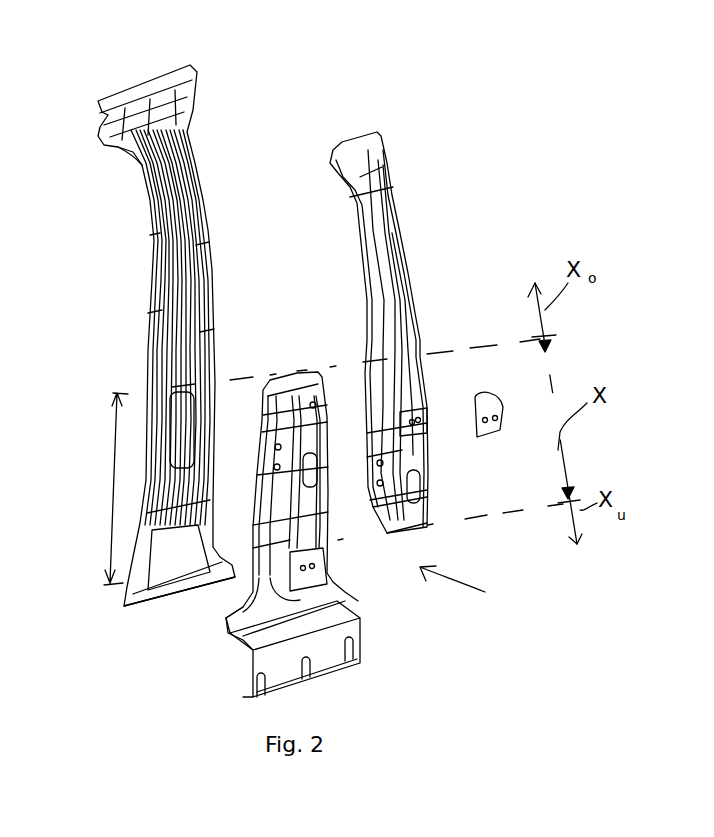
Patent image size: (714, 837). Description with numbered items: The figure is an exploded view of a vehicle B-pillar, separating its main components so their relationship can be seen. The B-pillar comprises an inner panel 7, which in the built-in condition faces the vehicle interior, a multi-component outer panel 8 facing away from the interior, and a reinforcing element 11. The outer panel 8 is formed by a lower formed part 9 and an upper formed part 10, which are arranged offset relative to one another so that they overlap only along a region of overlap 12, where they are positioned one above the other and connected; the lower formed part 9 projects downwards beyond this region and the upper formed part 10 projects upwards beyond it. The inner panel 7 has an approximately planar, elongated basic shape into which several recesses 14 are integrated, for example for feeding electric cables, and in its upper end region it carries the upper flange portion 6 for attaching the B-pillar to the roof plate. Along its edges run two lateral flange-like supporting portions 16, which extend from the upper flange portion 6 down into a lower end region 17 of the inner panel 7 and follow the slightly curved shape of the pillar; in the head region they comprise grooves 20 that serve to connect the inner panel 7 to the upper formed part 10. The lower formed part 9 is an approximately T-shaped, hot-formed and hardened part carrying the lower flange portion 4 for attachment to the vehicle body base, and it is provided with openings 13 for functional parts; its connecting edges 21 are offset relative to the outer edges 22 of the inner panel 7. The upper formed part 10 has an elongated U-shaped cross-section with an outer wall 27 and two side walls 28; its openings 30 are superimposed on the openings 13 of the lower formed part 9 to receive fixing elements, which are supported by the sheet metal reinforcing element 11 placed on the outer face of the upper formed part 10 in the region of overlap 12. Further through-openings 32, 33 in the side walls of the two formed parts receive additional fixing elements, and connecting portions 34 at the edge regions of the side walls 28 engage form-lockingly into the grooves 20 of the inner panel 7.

The lower flange portion 4 is at (362, 629).
The upper flange portion 6 is at (182, 92).
The inner panel 7 is at (150, 206).
The multi-component outer panel 8 is at (463, 589).
The lower formed part 9 is at (262, 653).
The upper formed part 10 is at (383, 183).
The reinforcing element 11 is at (488, 397).
The region of overlap 12 is at (114, 461).
The openings 13 is at (307, 403).
The recesses 14 is at (180, 443).
The lateral flange-like supporting portions 16 is at (158, 312).
The lower end region 17 is at (124, 586).
The grooves 20 is at (157, 184).
The connecting edges 21 is at (250, 585).
The outer edges 22 is at (212, 420).
The outer wall 27 is at (408, 367).
The side walls 28 is at (373, 293).
The openings 30 is at (416, 419).
The through-openings 32 is at (275, 447).
The through-openings 33 is at (380, 484).
The connecting portions 34 is at (360, 215).